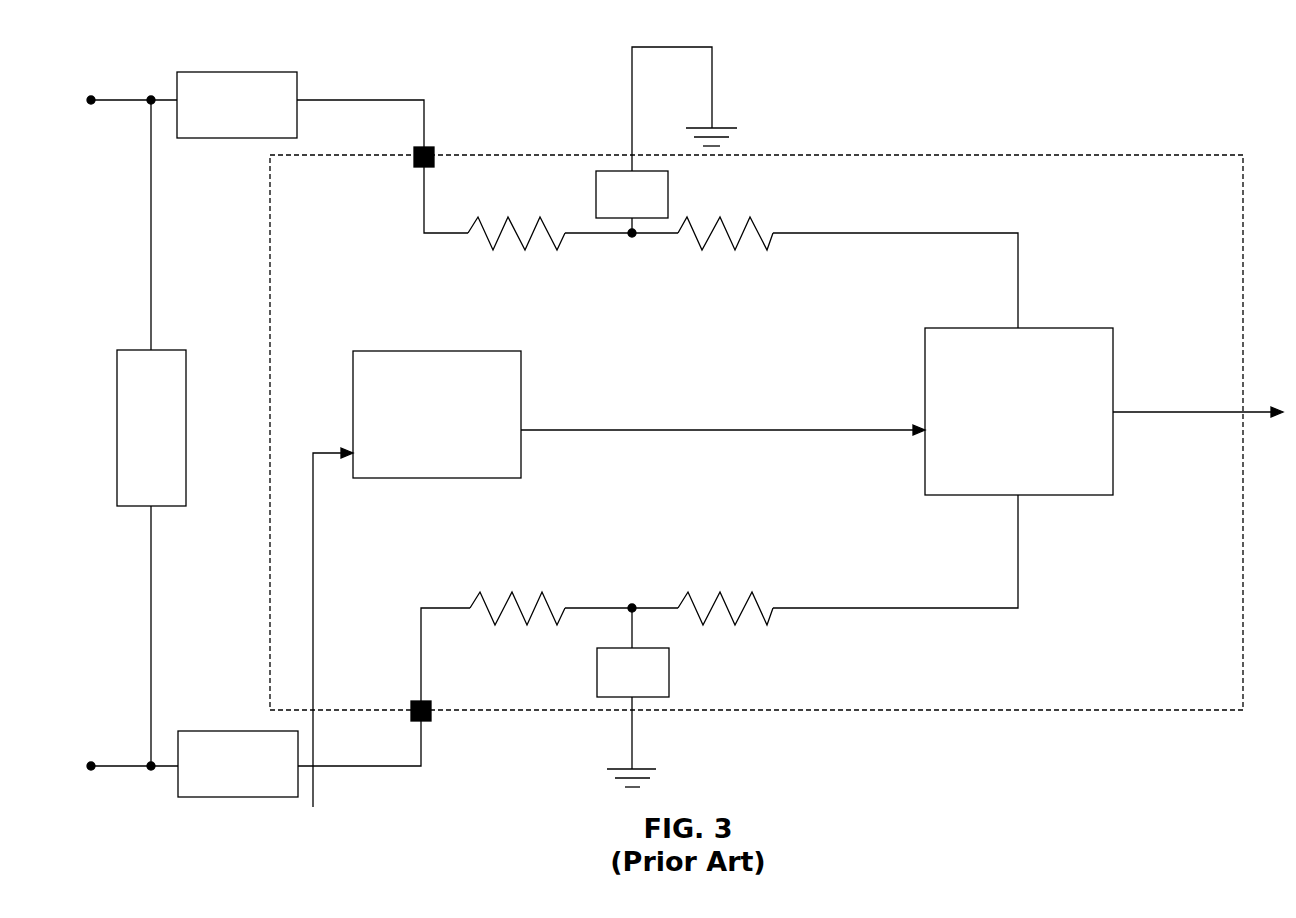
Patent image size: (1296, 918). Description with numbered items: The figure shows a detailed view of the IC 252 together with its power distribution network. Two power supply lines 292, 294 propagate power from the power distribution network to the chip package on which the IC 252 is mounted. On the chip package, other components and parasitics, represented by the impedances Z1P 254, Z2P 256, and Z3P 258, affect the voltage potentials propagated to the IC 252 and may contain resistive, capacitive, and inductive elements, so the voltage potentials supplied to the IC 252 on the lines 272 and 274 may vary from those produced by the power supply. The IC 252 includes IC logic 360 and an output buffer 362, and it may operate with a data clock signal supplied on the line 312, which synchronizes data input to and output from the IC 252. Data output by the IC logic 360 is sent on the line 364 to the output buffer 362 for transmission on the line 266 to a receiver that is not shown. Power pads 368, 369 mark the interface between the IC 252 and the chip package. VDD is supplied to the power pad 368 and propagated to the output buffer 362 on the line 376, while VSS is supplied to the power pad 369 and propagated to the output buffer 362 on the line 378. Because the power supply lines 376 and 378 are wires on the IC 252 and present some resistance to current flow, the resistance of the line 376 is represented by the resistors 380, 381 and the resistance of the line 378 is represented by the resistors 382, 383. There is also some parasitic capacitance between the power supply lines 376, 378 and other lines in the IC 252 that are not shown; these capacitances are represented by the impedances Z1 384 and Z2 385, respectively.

The IC 252 is at (803, 155).
The impedance Z1P 254 is at (220, 72).
The impedance Z2P 256 is at (215, 797).
The impedance Z3P 258 is at (186, 388).
The line 266 is at (1132, 412).
The line 272 is at (405, 100).
The line 274 is at (424, 768).
The power supply line 292 is at (110, 100).
The power supply line 294 is at (105, 768).
The line 312 is at (315, 637).
The IC logic 360 is at (377, 351).
The output buffer 362 is at (1087, 328).
The line 364 is at (865, 430).
The power pad 368 is at (434, 150).
The power pad 369 is at (431, 718).
The line 376 is at (906, 233).
The line 378 is at (840, 608).
The resistor 380 is at (525, 252).
The resistor 381 is at (735, 252).
The resistor 382 is at (527, 627).
The resistor 383 is at (735, 627).
The impedance Z1 384 is at (608, 171).
The impedance Z2 385 is at (612, 697).